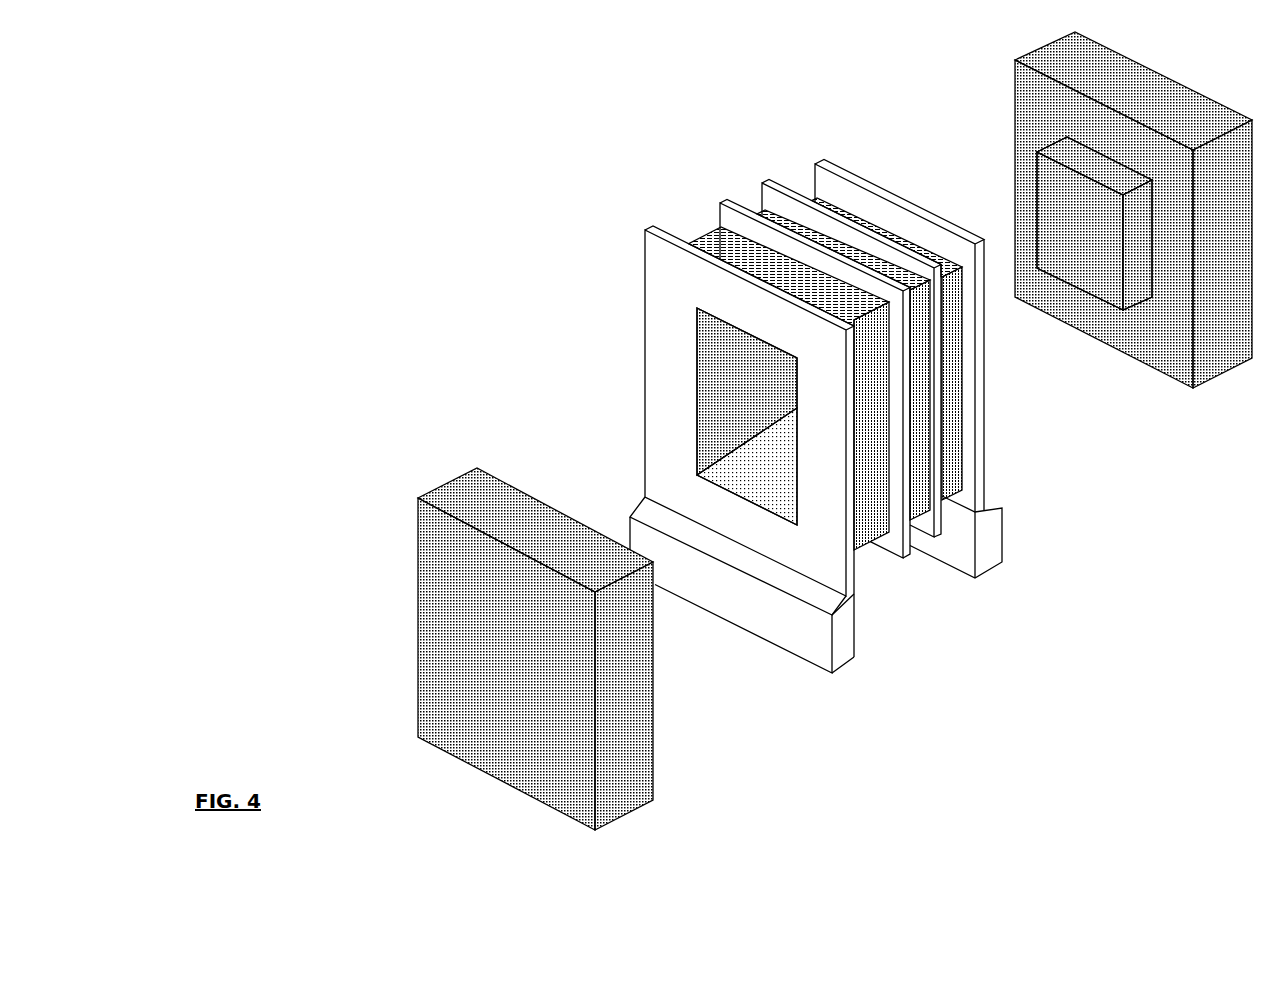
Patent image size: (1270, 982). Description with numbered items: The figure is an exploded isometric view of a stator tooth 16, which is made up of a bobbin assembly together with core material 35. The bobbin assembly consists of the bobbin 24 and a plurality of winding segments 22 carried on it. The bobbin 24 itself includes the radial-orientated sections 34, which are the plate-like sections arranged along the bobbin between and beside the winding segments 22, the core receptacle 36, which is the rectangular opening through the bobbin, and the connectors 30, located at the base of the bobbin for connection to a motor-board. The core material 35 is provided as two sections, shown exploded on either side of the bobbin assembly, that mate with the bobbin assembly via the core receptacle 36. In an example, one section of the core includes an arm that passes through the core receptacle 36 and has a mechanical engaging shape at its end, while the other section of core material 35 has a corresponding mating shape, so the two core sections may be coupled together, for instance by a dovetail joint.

The stator tooth 16 is at (446, 338).
The winding segments 22 is at (818, 200).
The bobbin 24 is at (664, 488).
The connectors 30 is at (996, 535).
The radial-orientated sections 34 is at (682, 210).
The core material 35 is at (990, 84).
The core receptacle 36 is at (716, 389).